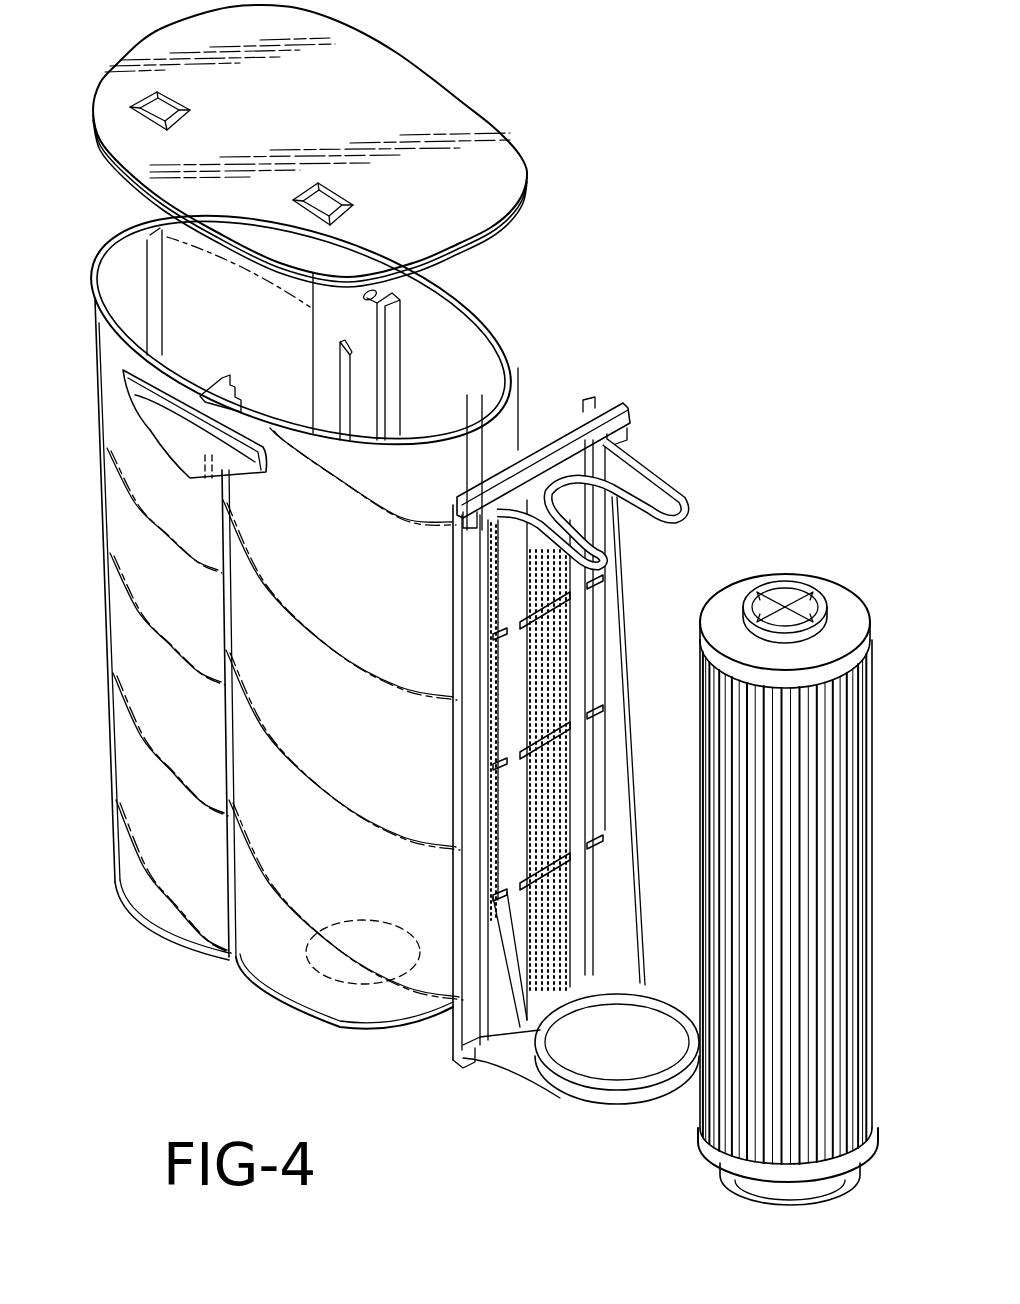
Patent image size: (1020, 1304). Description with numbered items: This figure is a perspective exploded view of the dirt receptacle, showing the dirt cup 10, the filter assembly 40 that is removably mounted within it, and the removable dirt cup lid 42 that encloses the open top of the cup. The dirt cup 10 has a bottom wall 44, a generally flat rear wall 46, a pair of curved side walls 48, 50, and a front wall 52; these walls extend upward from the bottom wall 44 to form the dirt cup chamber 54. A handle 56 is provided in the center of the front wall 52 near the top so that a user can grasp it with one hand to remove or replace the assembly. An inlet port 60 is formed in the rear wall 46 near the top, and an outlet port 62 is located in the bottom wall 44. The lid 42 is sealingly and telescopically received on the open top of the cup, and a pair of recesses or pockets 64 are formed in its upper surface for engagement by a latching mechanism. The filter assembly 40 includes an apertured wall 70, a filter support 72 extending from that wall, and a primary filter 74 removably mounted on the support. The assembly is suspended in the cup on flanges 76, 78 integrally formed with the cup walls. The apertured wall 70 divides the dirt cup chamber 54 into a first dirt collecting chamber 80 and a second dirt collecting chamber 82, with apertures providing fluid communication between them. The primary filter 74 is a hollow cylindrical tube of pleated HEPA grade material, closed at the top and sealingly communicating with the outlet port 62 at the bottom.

The dirt cup 10 is at (258, 980).
The filter assembly 40 is at (748, 493).
The dirt cup lid 42 is at (400, 70).
The bottom wall 44 is at (152, 937).
The rear wall 46 is at (445, 315).
The side wall 48 is at (482, 440).
The side wall 50 is at (150, 235).
The front wall 52 is at (140, 773).
The dirt cup chamber 54 is at (178, 322).
The handle 56 is at (165, 462).
The inlet port 60 is at (355, 372).
The outlet port 62 is at (340, 973).
The recesses or pockets 64 is at (168, 108).
The apertured wall 70 is at (553, 652).
The filter support 72 is at (658, 478).
The primary filter 74 is at (795, 577).
The flange 76 is at (398, 352).
The flange 78 is at (220, 382).
The first dirt collecting chamber 80 is at (190, 295).
The second dirt collecting chamber 82 is at (452, 360).